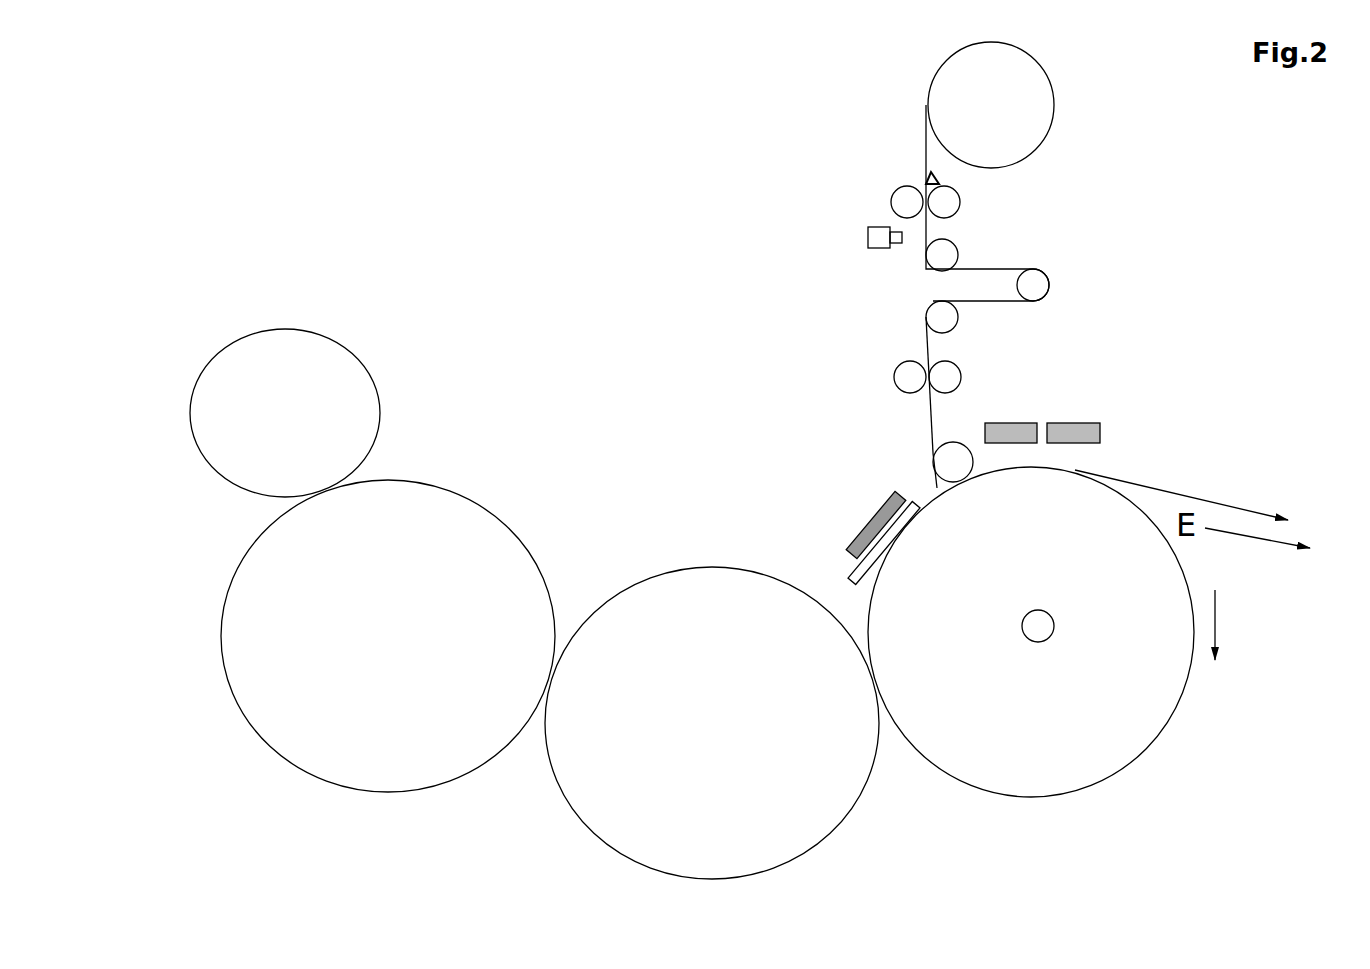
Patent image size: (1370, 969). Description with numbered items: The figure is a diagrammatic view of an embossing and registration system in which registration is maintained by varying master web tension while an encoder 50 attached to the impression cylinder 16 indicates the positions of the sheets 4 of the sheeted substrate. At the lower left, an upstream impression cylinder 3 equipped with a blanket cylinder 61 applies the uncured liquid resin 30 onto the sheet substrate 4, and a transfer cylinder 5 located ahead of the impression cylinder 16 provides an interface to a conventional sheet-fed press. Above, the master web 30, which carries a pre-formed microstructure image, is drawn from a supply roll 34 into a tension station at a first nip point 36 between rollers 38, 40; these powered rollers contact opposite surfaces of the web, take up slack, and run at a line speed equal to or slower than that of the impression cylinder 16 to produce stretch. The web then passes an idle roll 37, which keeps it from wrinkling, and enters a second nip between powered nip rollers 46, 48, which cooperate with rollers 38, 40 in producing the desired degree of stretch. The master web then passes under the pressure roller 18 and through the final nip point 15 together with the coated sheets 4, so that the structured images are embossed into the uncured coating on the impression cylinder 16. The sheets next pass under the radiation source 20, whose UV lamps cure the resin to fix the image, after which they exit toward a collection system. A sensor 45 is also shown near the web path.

The impression cylinder 3 is at (503, 523).
The sheets of the sheeted substrate 4 is at (880, 562).
The transfer cylinder 5 is at (651, 577).
The nip point 15 is at (932, 490).
The impression cylinder 16 is at (1134, 707).
The pressure roller 18 is at (972, 458).
The radiation source 20 is at (1112, 410).
The master web 30 is at (922, 150).
The supply roll 34 is at (1072, 107).
The first nip point 36 is at (940, 178).
The idle roll 37 is at (1062, 277).
The roller 38 is at (890, 188).
The roller 40 is at (963, 197).
The sensor 45 is at (858, 240).
The nip roller 46 is at (888, 370).
The nip roller 48 is at (965, 373).
The encoder 50 is at (1054, 641).
The blanket cylinder 61 is at (325, 363).